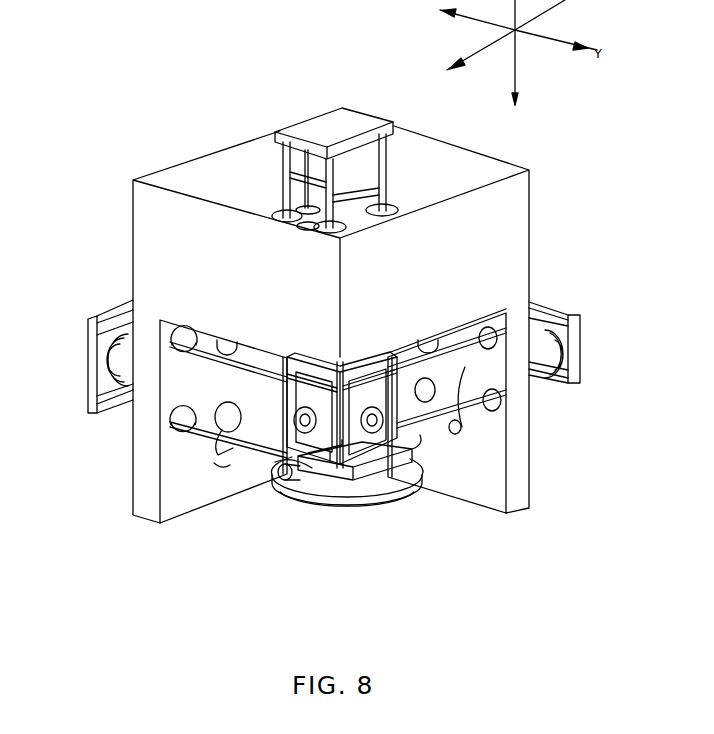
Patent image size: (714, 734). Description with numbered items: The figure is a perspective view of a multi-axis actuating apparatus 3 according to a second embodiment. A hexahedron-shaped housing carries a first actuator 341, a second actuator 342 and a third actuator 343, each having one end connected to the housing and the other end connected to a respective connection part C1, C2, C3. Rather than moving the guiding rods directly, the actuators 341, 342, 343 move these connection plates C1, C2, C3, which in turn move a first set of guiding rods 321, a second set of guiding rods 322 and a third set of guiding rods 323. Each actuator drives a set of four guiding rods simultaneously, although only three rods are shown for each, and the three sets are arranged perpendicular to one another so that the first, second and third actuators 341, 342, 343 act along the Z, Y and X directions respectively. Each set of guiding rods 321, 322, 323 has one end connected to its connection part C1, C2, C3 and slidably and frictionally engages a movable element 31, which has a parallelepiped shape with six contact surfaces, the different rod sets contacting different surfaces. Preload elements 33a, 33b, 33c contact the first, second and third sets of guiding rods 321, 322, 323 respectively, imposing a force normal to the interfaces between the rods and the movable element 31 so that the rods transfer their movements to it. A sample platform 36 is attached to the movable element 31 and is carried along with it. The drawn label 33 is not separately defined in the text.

The multi-axis actuating apparatus 3 is at (207, 52).
The support block 33 is at (205, 170).
The connection part C1 is at (307, 132).
The first set of guiding rods 321 is at (385, 186).
The first actuator 341 is at (318, 184).
The second actuator 342 is at (124, 371).
The connection part C2 is at (100, 311).
The third actuator 343 is at (580, 352).
The connection part C3 is at (558, 310).
The second set of guiding rods 322 is at (240, 432).
The third set of guiding rods 323 is at (473, 395).
The preload element 33b is at (354, 368).
The preload element 33a is at (283, 477).
The preload element 33c is at (406, 450).
The movable element 31 is at (295, 480).
The sample platform 36 is at (400, 494).